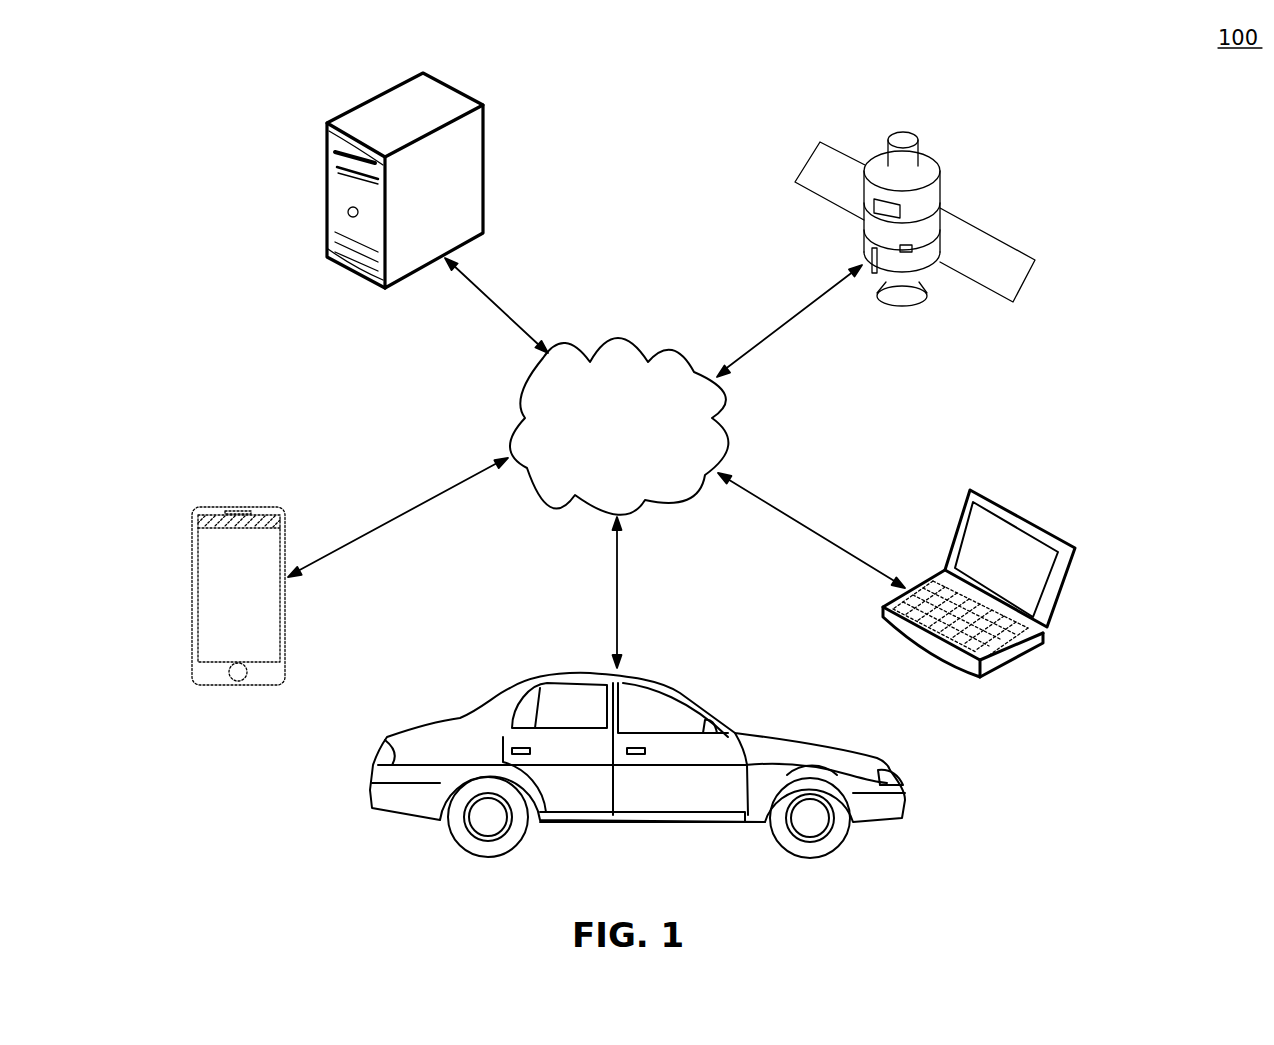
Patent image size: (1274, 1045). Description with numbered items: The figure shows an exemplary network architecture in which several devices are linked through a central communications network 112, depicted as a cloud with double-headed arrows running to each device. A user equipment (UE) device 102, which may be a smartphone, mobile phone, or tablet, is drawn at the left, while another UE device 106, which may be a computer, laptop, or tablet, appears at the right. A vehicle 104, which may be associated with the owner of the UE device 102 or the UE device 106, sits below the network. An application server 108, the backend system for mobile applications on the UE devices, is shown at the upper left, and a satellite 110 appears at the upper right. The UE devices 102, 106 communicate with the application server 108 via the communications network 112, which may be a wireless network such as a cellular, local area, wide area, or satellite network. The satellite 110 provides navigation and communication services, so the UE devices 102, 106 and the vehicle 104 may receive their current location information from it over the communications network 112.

The user equipment (UE) device 102 is at (192, 550).
The vehicle 104 is at (402, 733).
The UE device 106 is at (1075, 565).
The application server 108 is at (483, 157).
The satellite 110 is at (940, 182).
The communications network 112 is at (600, 465).